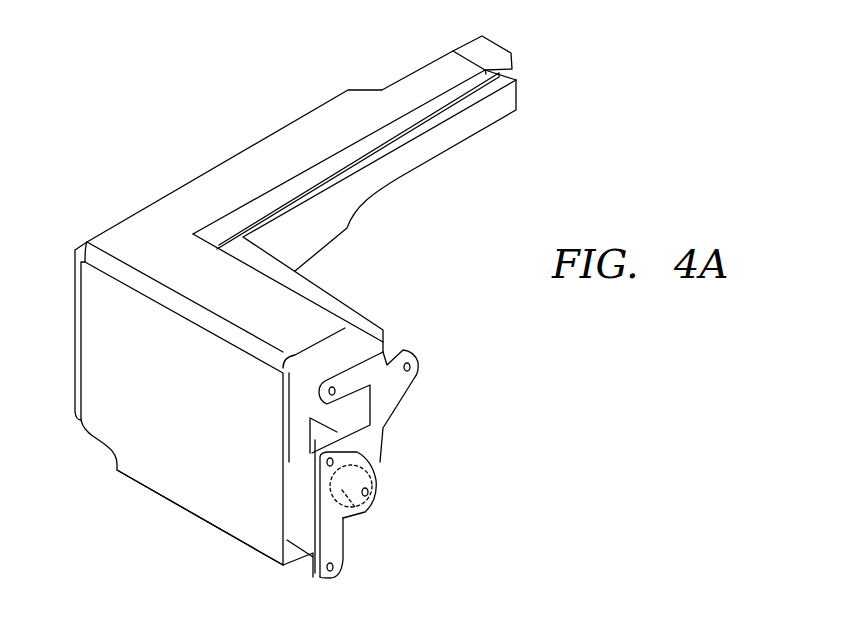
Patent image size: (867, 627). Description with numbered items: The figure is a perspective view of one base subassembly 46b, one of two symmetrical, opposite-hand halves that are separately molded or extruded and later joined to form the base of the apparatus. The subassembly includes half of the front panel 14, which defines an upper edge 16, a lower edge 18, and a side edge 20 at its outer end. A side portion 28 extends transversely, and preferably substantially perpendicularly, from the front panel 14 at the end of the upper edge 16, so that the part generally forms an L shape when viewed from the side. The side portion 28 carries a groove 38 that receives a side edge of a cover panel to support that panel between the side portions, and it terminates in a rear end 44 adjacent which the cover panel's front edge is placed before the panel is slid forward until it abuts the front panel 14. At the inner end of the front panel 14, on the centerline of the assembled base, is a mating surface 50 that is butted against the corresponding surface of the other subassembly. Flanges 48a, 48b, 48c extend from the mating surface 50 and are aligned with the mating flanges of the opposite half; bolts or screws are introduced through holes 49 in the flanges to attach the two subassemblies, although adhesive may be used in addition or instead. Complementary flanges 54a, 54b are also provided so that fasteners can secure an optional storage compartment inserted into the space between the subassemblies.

The front panel 14 is at (180, 469).
The upper edge 16 is at (132, 277).
The lower edge 18 is at (233, 540).
The side edge 20 is at (72, 370).
The side portion 28 is at (258, 160).
The groove 38 is at (338, 162).
The rear end 44 is at (497, 45).
The base subassembly 46b is at (143, 236).
The flange 48a is at (393, 388).
The flange 48b is at (370, 486).
The flange 48c is at (345, 567).
The hole 49 is at (417, 370).
The mating surface 50 is at (358, 510).
The complementary flange 54a is at (333, 370).
The complementary flange 54b is at (340, 466).